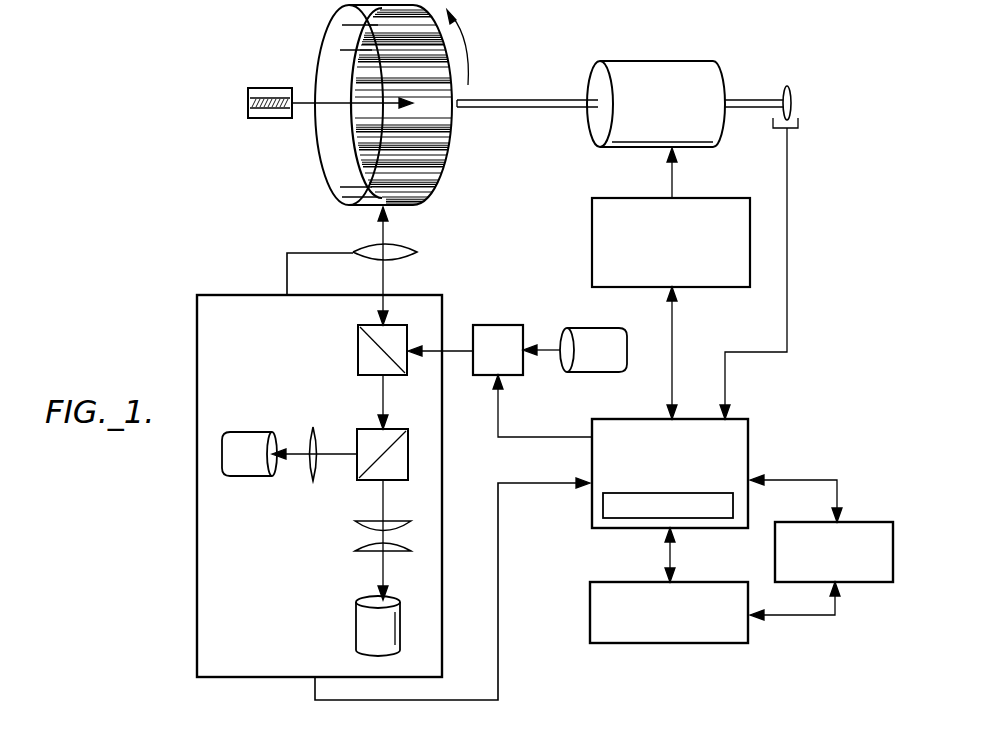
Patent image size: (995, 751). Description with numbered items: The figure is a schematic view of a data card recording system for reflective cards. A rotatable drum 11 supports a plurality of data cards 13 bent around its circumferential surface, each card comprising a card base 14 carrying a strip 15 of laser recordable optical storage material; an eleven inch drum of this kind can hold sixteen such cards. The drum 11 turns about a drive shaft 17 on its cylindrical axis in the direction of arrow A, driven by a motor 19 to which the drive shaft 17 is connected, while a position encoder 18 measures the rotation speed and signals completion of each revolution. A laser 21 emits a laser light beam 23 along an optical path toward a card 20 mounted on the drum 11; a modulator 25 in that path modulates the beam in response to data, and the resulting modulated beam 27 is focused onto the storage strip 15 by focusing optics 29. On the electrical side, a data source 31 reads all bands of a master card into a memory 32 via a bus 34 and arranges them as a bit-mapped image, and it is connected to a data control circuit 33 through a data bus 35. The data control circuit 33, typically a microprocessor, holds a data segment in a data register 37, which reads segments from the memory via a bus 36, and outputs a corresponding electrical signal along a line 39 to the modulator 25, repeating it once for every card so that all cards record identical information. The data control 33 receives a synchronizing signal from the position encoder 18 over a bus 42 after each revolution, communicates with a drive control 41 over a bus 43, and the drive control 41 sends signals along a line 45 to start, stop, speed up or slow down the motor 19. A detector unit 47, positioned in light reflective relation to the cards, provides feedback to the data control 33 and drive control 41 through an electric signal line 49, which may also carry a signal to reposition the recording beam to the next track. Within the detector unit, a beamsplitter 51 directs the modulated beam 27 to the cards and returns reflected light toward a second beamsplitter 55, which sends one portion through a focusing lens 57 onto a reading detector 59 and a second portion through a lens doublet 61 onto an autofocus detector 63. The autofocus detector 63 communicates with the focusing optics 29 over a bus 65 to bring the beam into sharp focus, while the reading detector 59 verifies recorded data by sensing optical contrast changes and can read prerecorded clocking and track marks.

The rotatable drum 11 is at (332, 37).
The data cards 13 is at (432, 187).
The card base 14 is at (252, 90).
The strip of laser recordable optical storage material 15 is at (275, 92).
The drive shaft 17 is at (505, 98).
The position encoder 18 is at (774, 66).
The motor 19 is at (632, 70).
The card 20 is at (376, 207).
The laser 21 is at (597, 328).
The laser light beam 23 is at (552, 352).
The modulator 25 is at (500, 323).
The modulated beam 27 is at (448, 353).
The focusing optics 29 is at (405, 242).
The data source 31 is at (715, 582).
The memory 32 is at (847, 522).
The data control circuit 33 is at (750, 438).
The bus 34 is at (817, 617).
The data bus 35 is at (675, 557).
The bus 36 is at (817, 480).
The data register 37 is at (658, 507).
The line 39 is at (532, 435).
The drive control 41 is at (707, 198).
The bus 42 is at (750, 355).
The bus 43 is at (674, 332).
The line 45 is at (665, 175).
The detector unit 47 is at (248, 295).
The electric signal line 49 is at (500, 557).
The beamsplitter 51 is at (357, 345).
The second beamsplitter 55 is at (373, 427).
The focusing lens 57 is at (312, 430).
The reading detector 59 is at (238, 476).
The lens doublet 61 is at (353, 545).
The autofocus detector 63 is at (356, 622).
The bus 65 is at (318, 252).
The arrow A is at (463, 40).